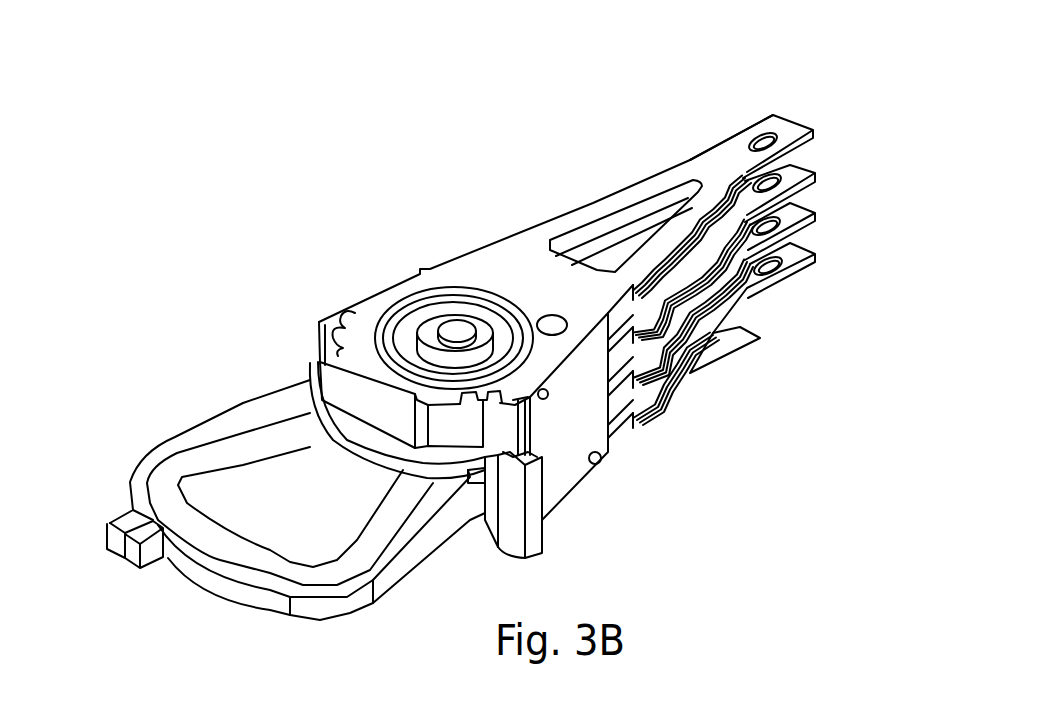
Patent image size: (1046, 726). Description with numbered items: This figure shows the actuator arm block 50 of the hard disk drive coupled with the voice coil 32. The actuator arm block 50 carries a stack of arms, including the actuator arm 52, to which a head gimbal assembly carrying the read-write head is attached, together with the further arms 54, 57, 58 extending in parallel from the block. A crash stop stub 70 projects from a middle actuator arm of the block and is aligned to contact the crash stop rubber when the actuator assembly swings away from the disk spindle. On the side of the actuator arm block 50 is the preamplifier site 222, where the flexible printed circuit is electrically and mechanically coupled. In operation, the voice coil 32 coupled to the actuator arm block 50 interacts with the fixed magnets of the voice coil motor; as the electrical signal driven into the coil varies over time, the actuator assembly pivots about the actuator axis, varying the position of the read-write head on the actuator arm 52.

The actuator arm block 50 is at (817, 93).
The actuator arm 52 is at (812, 130).
The second actuator arm 54 is at (813, 171).
The third actuator arm 57 is at (815, 214).
The fourth actuator arm 58 is at (813, 255).
The voice coil 32 is at (265, 398).
The crash stop stub 70 is at (690, 374).
The preamplifier site 222 is at (567, 477).